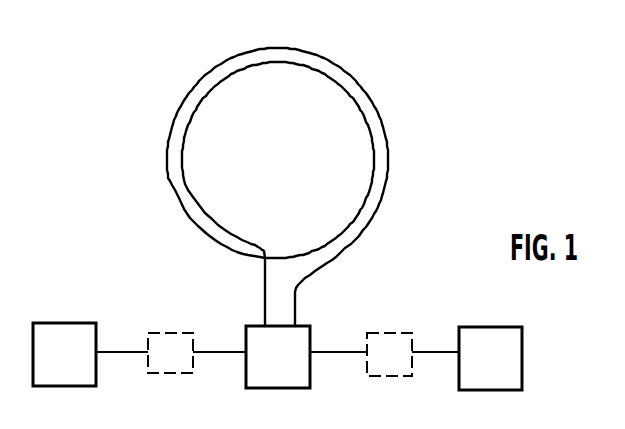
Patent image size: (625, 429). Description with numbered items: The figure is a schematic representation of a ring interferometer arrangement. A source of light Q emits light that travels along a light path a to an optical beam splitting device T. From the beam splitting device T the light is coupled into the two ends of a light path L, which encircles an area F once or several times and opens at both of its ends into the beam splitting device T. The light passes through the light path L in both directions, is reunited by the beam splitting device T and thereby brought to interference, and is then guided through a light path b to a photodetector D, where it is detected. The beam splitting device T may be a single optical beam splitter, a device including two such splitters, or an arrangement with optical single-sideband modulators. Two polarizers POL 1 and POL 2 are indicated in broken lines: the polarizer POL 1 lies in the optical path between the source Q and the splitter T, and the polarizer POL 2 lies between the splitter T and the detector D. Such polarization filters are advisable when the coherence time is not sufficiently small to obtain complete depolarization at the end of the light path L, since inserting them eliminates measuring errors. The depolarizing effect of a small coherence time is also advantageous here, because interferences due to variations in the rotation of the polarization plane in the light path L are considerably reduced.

The light path L is at (277, 169).
The area F is at (278, 158).
The source of light Q is at (64, 354).
The optical beam splitting device T is at (278, 357).
The photodetector D is at (490, 358).
The light path a is at (115, 352).
The light path b is at (337, 354).
The polarizer POL 1 is at (172, 333).
The polarizer POL 2 is at (387, 333).